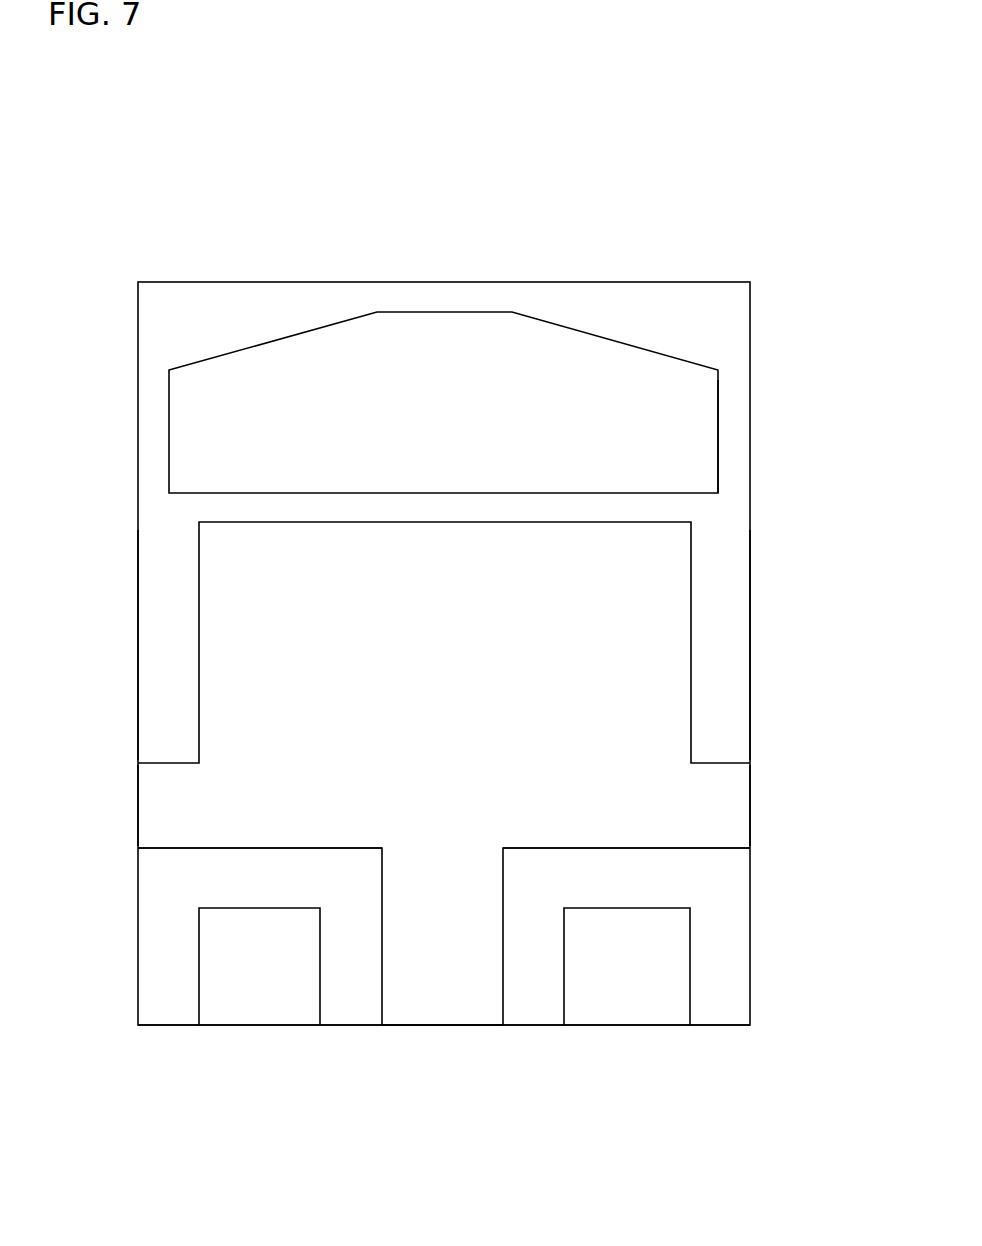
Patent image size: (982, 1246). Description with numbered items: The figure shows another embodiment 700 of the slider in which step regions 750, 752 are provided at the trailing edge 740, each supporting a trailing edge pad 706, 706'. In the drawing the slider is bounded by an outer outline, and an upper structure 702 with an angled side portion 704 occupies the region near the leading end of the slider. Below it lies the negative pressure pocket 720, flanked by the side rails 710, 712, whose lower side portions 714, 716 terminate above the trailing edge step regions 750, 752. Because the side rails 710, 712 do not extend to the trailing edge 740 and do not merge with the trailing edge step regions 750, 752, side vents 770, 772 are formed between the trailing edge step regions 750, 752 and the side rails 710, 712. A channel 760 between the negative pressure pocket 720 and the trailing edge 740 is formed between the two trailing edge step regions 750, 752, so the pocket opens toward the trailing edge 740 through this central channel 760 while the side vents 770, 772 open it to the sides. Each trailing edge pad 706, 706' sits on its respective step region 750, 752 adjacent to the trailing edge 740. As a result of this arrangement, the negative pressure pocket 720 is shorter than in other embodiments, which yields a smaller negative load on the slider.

The embodiment 700 is at (103, 292).
The upper layer 702 is at (680, 395).
The side wall of upper layer 704 is at (735, 462).
The negative pressure pocket 720 is at (575, 597).
The side rail 710 is at (168, 630).
The side rail 712 is at (720, 680).
The left lower side portion 714 is at (137, 790).
The right lower side portion 716 is at (750, 782).
The side vent 770 is at (162, 812).
The side vent 772 is at (708, 819).
The step region 750 is at (120, 848).
The step region 752 is at (765, 848).
The trailing edge pad 706 is at (247, 1023).
The trailing edge pad 706' is at (636, 1020).
The channel 760 is at (431, 1003).
The trailing edge 740 is at (475, 1028).